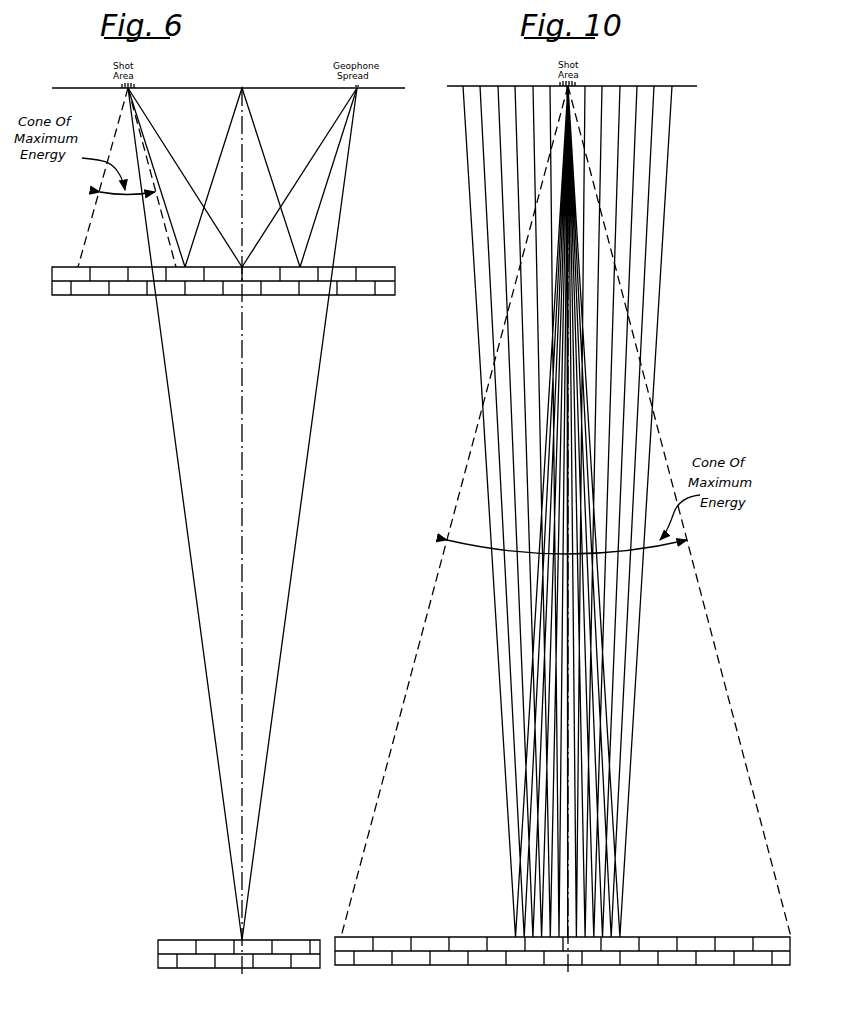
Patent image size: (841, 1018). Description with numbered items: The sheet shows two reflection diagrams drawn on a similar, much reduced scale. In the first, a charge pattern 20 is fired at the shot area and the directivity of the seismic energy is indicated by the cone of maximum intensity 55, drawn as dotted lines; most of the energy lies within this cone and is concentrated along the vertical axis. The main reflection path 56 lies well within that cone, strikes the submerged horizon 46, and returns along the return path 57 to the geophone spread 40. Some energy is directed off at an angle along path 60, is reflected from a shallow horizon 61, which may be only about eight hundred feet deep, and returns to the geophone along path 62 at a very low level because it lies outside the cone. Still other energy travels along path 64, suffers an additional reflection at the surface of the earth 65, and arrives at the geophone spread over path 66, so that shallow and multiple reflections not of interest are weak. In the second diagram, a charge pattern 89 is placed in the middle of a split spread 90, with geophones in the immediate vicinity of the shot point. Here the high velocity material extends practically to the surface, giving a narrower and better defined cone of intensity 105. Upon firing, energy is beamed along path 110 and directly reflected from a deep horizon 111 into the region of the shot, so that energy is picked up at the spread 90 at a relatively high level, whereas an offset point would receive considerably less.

In FIG. 6, the charge pattern 20 is at (137, 84).
In FIG. 6, the geophone spread 40 is at (361, 92).
In FIG. 6, the submerged horizon 46 is at (210, 940).
In FIG. 6, the cone of maximum intensity 55 is at (93, 218).
In FIG. 6, the main reflection path 56 is at (168, 375).
In FIG. 6, the return path 57 is at (323, 348).
In FIG. 6, the angled path 60 is at (187, 165).
In FIG. 6, the shallow horizon 61 is at (365, 268).
In FIG. 6, the return path from shallow horizon 62 is at (320, 143).
In FIG. 6, the path of multiple reflection 64 is at (150, 148).
In FIG. 6, the surface of the earth 65 is at (242, 88).
In FIG. 6, the path to geophone spread after surface reflection 66 is at (322, 201).
In FIG. 10, the charge pattern 89 is at (553, 74).
In FIG. 10, the split spread 90 is at (613, 76).
In FIG. 10, the cone of intensity 105 is at (718, 650).
In FIG. 10, the path 110 is at (600, 603).
In FIG. 10, the deep horizon 111 is at (706, 937).